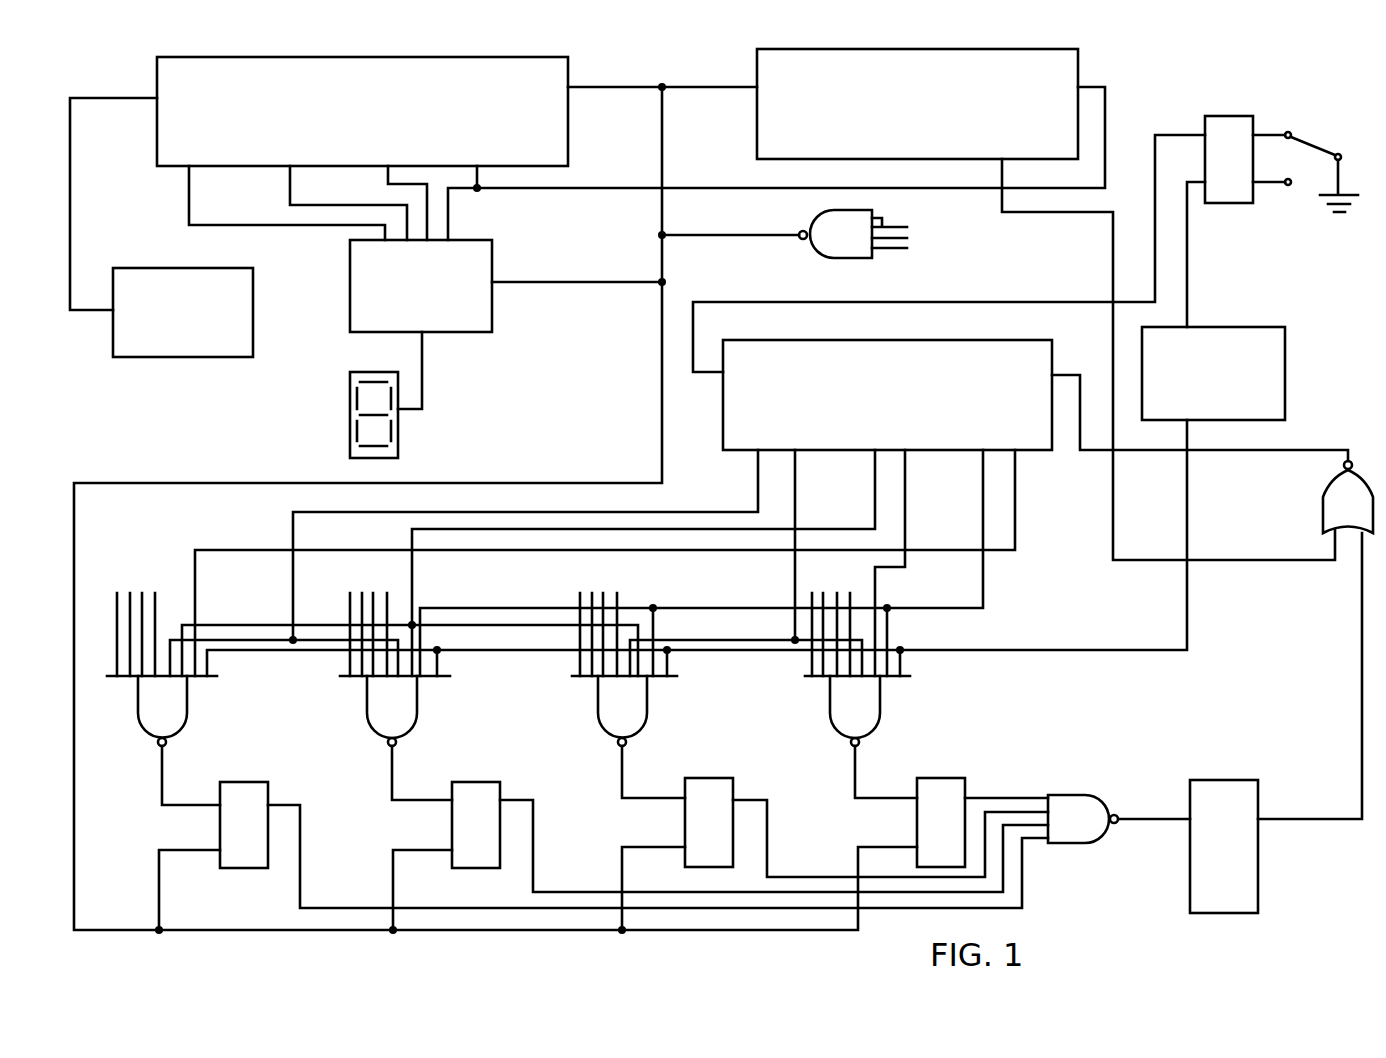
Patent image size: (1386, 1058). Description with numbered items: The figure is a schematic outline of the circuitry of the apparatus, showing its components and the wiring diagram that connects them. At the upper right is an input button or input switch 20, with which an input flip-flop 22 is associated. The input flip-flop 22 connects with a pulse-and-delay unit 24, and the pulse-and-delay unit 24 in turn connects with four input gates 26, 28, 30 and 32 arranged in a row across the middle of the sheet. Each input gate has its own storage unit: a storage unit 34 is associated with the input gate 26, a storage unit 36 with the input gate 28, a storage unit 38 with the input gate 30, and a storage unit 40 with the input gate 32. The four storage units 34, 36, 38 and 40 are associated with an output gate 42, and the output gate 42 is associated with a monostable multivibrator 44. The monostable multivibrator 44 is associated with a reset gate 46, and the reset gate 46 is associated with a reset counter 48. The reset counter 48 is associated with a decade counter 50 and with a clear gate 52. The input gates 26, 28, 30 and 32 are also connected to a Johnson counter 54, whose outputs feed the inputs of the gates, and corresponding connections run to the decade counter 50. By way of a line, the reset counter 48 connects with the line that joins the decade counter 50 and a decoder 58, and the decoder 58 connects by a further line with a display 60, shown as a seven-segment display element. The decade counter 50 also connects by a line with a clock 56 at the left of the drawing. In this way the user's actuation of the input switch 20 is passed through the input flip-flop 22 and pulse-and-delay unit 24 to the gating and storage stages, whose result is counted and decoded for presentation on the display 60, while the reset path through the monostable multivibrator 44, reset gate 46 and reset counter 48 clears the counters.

The input switch 20 is at (1338, 152).
The input flip-flop 22 is at (1262, 94).
The pulse-and-delay unit 24 is at (1213, 373).
The input gate 26 is at (162, 669).
The input gate 28 is at (395, 669).
The input gate 30 is at (624, 669).
The input gate 32 is at (857, 669).
The storage unit 34 is at (244, 825).
The storage unit 36 is at (476, 825).
The storage unit 38 is at (709, 822).
The storage unit 40 is at (941, 822).
The output gate 42 is at (1083, 819).
The monostable multivibrator 44 is at (1224, 846).
The reset gate 46 is at (1348, 497).
The reset counter 48 is at (917, 104).
The decade counter 50 is at (362, 111).
The clear gate 52 is at (853, 234).
The Johnson counter 54 is at (887, 395).
The clock 56 is at (183, 312).
The decoder 58 is at (421, 286).
The display 60 is at (350, 418).